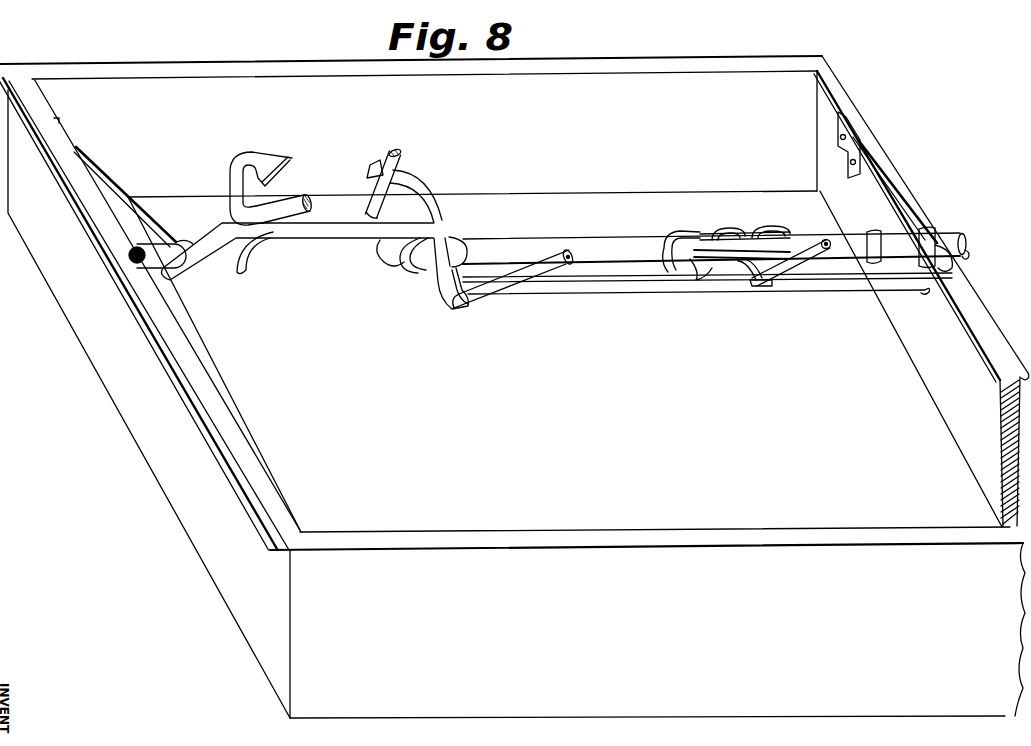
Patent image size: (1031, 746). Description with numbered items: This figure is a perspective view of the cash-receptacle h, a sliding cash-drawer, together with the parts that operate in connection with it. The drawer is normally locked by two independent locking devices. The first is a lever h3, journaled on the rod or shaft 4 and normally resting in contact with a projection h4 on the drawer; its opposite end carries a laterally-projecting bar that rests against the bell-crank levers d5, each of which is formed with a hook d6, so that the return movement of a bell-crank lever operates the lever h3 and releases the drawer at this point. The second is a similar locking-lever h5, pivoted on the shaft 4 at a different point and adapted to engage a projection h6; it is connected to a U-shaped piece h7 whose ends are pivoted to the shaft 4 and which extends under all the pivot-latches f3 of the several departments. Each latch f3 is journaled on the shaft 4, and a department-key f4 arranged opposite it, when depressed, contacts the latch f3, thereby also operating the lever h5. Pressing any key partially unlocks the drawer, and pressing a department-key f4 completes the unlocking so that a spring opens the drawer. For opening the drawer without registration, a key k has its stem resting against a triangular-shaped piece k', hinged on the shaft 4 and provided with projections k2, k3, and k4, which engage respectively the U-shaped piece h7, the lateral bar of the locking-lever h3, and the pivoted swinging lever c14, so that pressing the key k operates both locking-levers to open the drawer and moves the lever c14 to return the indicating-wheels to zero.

The cash-receptacle h is at (514, 387).
The lever h3 is at (127, 200).
The projection h4 is at (70, 138).
The locking-lever h5 is at (900, 203).
The projection h6 is at (847, 140).
The U-shaped piece h7 is at (323, 237).
The bell-crank lever d5 is at (305, 181).
The hook d6 is at (267, 153).
The key k is at (440, 251).
The triangular-shaped piece k' is at (411, 191).
The projection k2 is at (460, 277).
The projection k3 is at (430, 215).
The projection k4 is at (437, 164).
The swinging lever c14 is at (410, 158).
The shaft 4 is at (513, 247).
The pivot-latch f3 is at (730, 263).
The key f4 is at (807, 260).